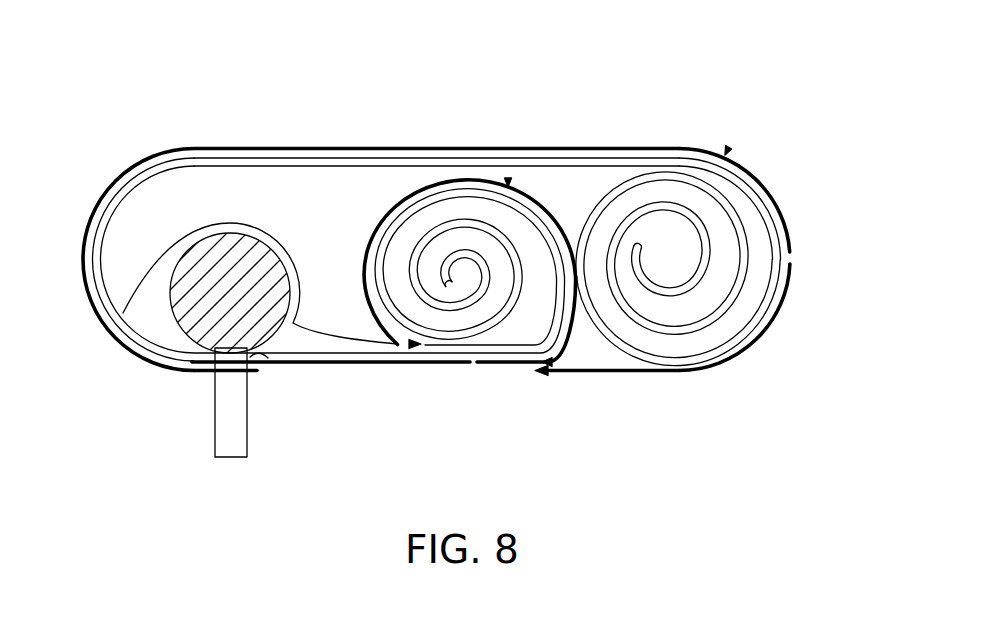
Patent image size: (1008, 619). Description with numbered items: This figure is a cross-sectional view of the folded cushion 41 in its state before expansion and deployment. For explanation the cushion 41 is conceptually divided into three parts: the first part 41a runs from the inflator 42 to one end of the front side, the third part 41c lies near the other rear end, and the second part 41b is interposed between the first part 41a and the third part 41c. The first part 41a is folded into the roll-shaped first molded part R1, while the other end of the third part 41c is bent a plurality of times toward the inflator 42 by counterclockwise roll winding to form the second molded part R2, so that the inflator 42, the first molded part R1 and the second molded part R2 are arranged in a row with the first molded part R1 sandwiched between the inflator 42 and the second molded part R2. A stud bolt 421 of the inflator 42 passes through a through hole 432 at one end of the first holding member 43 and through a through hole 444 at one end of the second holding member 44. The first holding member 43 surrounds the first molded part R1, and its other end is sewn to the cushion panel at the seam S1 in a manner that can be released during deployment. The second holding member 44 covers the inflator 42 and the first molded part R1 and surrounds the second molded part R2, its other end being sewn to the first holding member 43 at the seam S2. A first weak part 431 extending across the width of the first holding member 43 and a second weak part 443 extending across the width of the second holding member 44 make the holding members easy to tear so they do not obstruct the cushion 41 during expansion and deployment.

The cushion 41 is at (235, 113).
The first part 41a is at (570, 333).
The second part 41b is at (353, 157).
The third part 41c is at (743, 330).
The inflator 42 is at (170, 330).
The stud bolt 421 is at (218, 437).
The first holding member 43 is at (453, 182).
The first weak part 431 is at (473, 367).
The through hole 432 is at (266, 367).
The second holding member 44 is at (715, 368).
The second weak part 443 is at (788, 262).
The through hole 444 is at (212, 372).
The first molded part R1 is at (508, 187).
The second molded part R2 is at (725, 155).
The seam S1 is at (413, 347).
The seam S2 is at (543, 377).